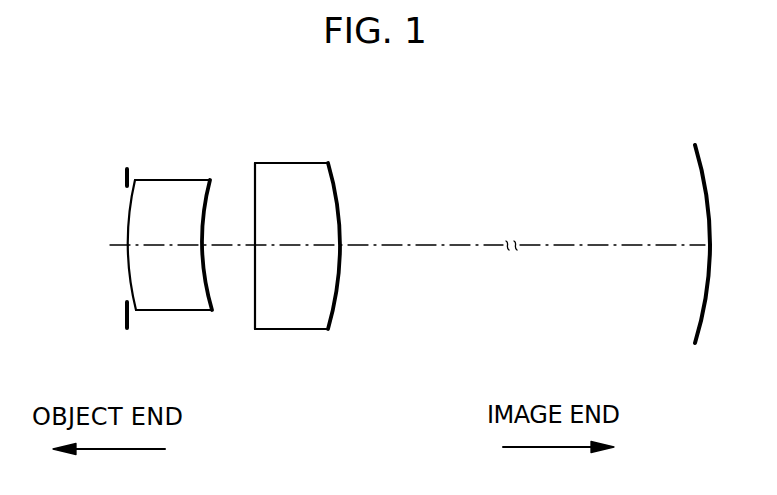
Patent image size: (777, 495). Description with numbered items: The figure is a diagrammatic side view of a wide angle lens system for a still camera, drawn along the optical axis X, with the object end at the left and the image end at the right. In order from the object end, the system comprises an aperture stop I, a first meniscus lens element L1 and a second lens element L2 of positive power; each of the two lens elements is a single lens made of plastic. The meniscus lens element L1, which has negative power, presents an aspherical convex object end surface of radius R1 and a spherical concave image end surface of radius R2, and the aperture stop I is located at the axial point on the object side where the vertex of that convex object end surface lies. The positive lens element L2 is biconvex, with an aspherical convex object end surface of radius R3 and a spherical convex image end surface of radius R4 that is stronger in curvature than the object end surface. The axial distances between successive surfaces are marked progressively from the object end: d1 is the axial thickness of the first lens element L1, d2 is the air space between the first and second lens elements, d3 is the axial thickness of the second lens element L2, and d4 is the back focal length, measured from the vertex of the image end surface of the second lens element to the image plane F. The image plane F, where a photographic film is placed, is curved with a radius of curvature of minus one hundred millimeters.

The first meniscus lens element L1 is at (156, 237).
The second lens element L2 is at (304, 243).
The aperture stop I is at (127, 171).
The lens surface radius R1 is at (130, 280).
The lens surface radius R2 is at (213, 293).
The lens surface radius R3 is at (253, 310).
The lens surface radius R4 is at (333, 310).
The axial distance between lens surfaces d1 is at (163, 245).
The axial distance between lens surfaces d2 is at (227, 243).
The axial distance between lens surfaces d3 is at (323, 245).
The back focal length distance d4 is at (555, 240).
The image plane F is at (693, 151).
The optical axis X is at (645, 245).